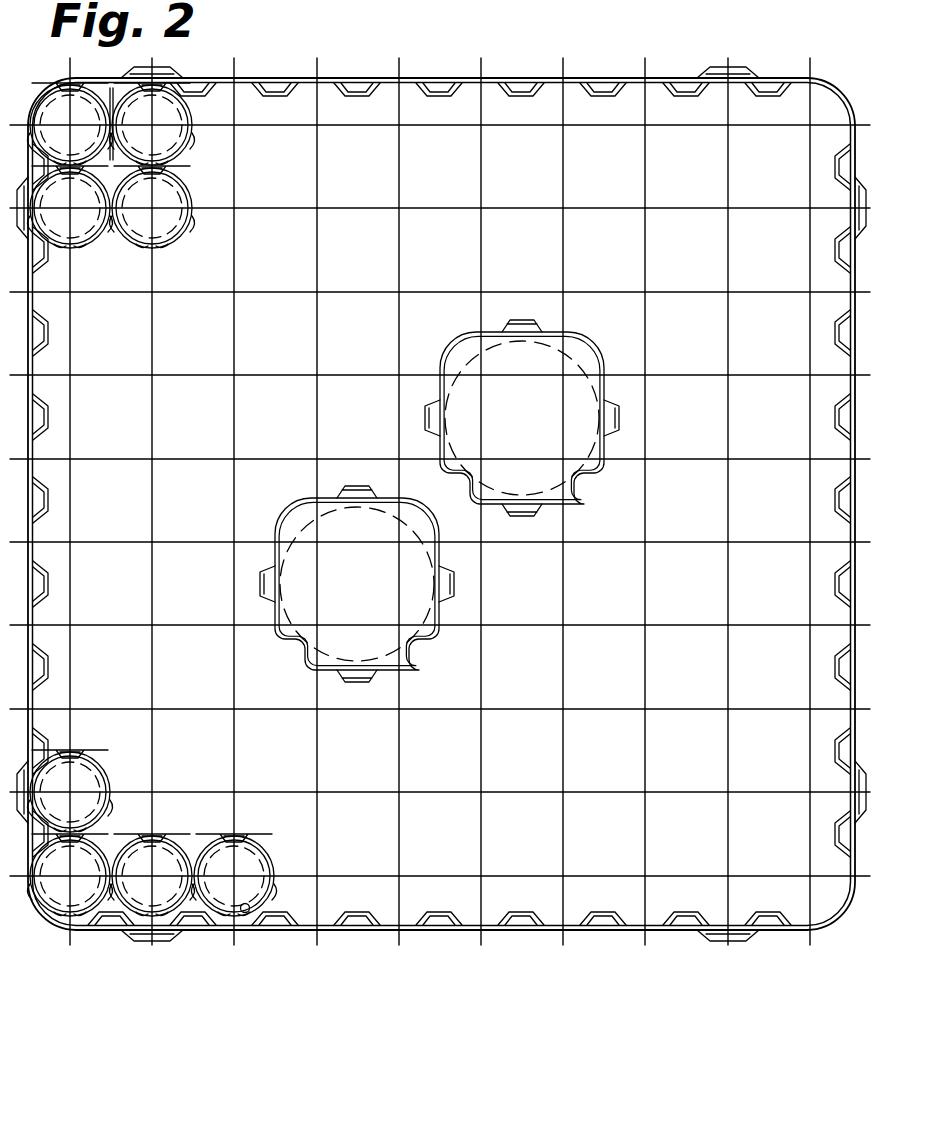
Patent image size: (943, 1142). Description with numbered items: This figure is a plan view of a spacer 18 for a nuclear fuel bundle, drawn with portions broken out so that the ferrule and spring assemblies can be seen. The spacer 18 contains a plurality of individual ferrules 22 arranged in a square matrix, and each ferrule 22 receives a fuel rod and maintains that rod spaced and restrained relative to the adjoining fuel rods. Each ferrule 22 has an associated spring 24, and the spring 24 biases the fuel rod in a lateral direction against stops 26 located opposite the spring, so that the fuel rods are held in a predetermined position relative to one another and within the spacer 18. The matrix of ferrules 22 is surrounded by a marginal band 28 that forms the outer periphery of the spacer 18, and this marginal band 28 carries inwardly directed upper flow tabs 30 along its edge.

The spacer 18 is at (551, 964).
The ferrule 22 is at (278, 860).
The spring 24 is at (253, 840).
The stop 26 is at (243, 912).
The marginal band 28 is at (641, 929).
The upper flow tab 30 is at (440, 900).